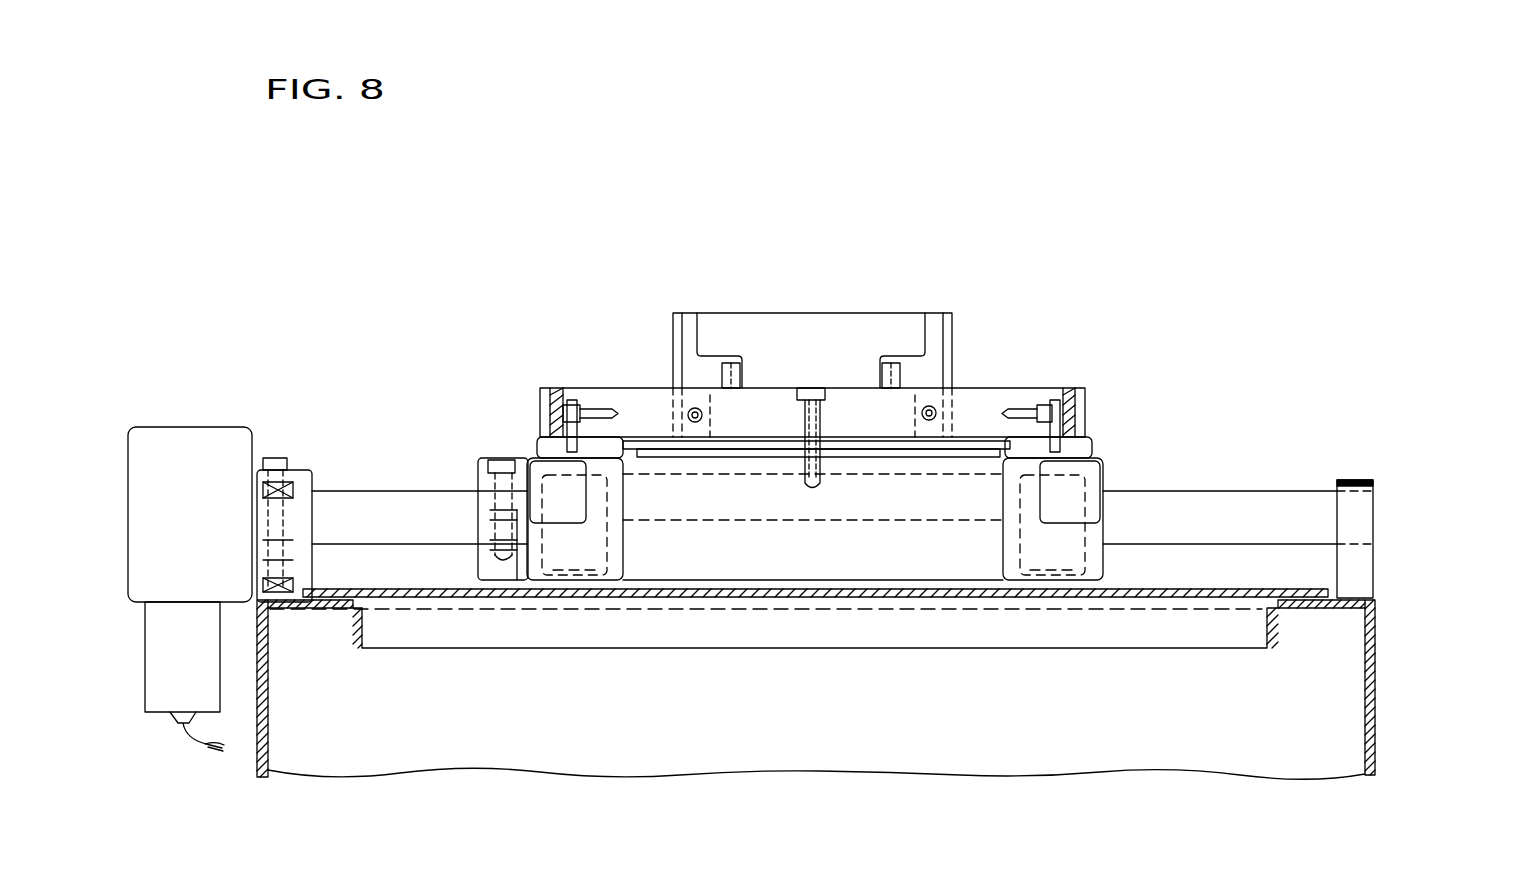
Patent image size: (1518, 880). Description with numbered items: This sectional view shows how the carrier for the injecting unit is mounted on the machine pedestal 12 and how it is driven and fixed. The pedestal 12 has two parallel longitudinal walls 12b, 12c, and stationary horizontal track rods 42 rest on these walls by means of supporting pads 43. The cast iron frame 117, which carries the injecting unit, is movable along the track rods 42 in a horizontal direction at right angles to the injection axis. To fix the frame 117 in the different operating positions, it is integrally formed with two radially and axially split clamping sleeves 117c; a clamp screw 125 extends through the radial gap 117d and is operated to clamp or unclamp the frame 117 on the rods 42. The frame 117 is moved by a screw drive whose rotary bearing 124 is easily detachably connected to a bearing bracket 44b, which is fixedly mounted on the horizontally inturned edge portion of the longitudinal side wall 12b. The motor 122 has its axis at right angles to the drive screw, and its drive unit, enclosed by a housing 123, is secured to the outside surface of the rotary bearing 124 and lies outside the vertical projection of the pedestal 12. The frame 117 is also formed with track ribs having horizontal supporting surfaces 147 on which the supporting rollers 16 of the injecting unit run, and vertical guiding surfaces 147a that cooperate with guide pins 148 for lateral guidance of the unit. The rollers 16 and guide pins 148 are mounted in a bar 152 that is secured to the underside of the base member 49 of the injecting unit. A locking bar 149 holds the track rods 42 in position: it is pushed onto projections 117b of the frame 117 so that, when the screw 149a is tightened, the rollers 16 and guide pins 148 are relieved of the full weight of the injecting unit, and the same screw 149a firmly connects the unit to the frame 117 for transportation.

The machine pedestal 12 is at (1377, 712).
The longitudinal side wall 12b is at (266, 722).
The longitudinal wall 12c is at (1373, 648).
The supporting rollers 16 is at (538, 390).
The track rods 42 is at (357, 512).
The supporting pads 43 is at (256, 548).
The bearing bracket 44b is at (290, 608).
The base member 49 is at (878, 332).
The cast iron frame 117 is at (1105, 463).
The projections 117b is at (670, 455).
The clamping sleeves 117c is at (478, 472).
The radial gap 117d is at (505, 522).
The motor 122 is at (177, 638).
The housing 123 is at (168, 498).
The rotary bearing 124 is at (298, 485).
The clamp screw 125 is at (497, 455).
The horizontal supporting surfaces 147 is at (560, 402).
The vertical guiding surfaces 147a is at (585, 435).
The guide pins 148 is at (572, 445).
The locking bar 149 is at (770, 448).
The screw 149a is at (820, 386).
The bar 152 is at (1020, 447).